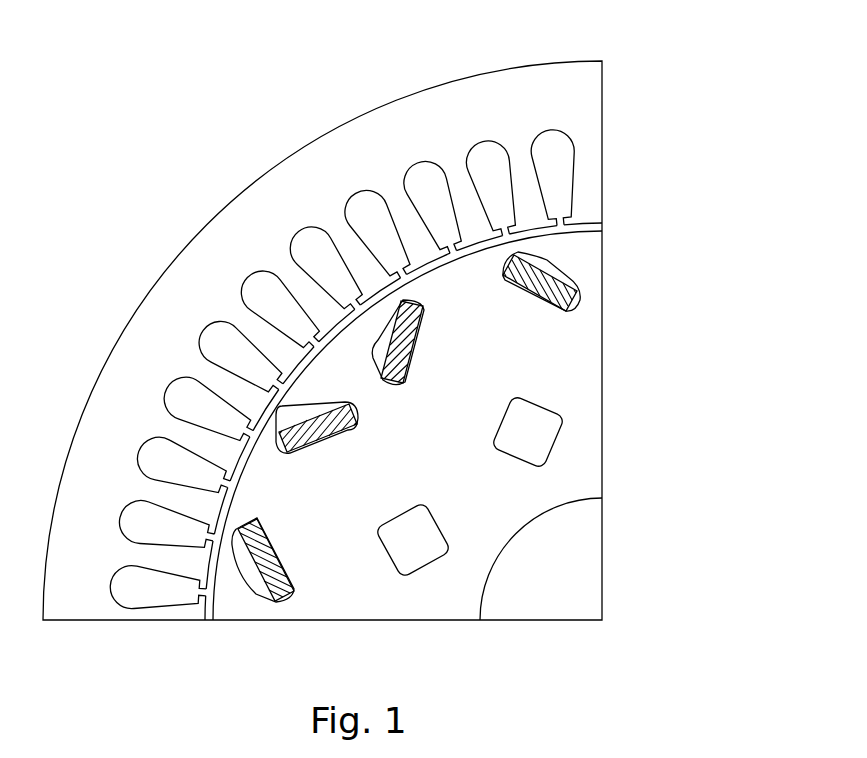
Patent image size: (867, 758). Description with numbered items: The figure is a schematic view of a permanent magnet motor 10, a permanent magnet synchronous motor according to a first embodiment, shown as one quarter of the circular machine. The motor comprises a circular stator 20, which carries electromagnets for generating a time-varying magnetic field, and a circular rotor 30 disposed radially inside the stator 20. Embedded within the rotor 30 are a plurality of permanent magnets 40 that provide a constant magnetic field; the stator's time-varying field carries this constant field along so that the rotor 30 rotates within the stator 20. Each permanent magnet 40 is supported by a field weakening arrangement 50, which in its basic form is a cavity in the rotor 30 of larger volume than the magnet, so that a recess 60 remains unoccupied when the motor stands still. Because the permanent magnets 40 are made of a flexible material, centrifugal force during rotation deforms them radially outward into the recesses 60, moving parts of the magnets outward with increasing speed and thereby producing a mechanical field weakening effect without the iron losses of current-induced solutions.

The permanent magnet motor 10 is at (623, 77).
The stator 20 is at (227, 202).
The rotor 30 is at (603, 362).
The permanent magnet 40 is at (280, 445).
The field weakening arrangement 50 is at (325, 478).
The recess 60 is at (280, 408).